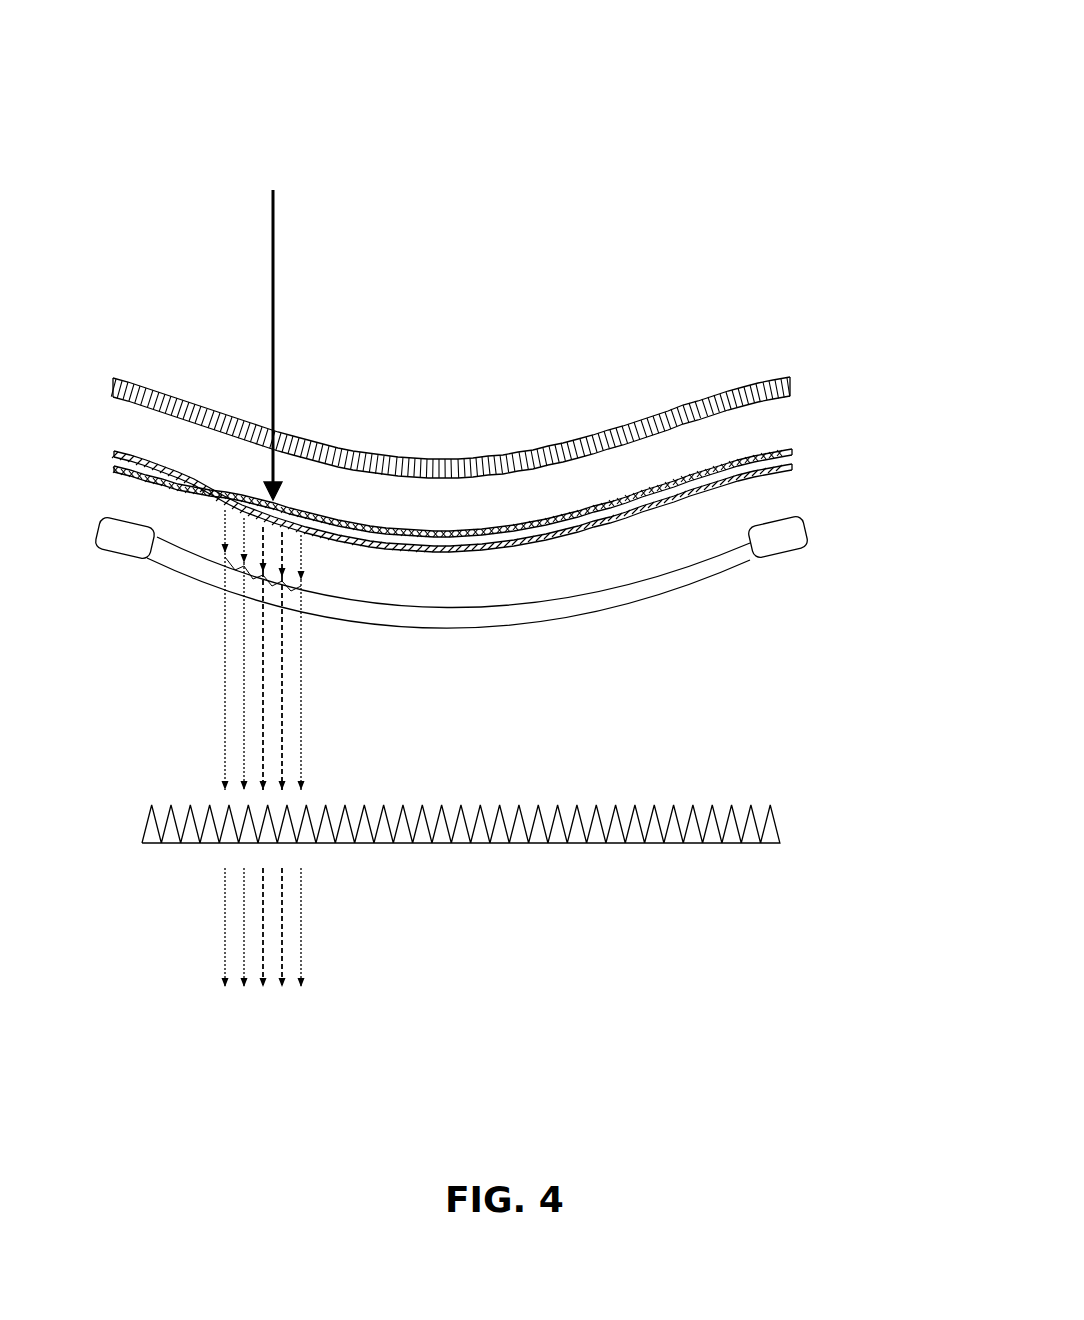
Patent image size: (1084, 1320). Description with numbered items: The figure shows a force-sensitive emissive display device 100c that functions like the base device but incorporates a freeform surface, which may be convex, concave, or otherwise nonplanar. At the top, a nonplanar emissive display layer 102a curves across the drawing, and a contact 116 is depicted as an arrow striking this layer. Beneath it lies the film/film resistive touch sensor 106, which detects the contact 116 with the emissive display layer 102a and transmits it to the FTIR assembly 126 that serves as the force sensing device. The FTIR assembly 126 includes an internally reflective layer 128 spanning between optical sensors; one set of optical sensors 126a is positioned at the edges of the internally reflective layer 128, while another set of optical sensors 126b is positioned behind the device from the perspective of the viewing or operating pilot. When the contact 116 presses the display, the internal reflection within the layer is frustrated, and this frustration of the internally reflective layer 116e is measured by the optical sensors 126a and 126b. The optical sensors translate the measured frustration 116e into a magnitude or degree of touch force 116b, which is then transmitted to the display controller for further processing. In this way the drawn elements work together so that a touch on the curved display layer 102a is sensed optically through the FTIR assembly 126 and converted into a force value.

The force-sensitive emissive display device 100c is at (165, 72).
The contact 116 is at (276, 303).
The nonplanar emissive display layer 102a is at (748, 388).
The film/film resistive touch sensor 106 is at (838, 427).
The FTIR assembly 126 is at (838, 497).
The optical sensors at the edges 126a is at (116, 560).
The internally reflective layer 128 is at (590, 603).
The optical sensors behind the display device 126b is at (778, 825).
The frustration of the internally reflective layer 116e is at (207, 592).
The touch force magnitude 116b is at (327, 870).